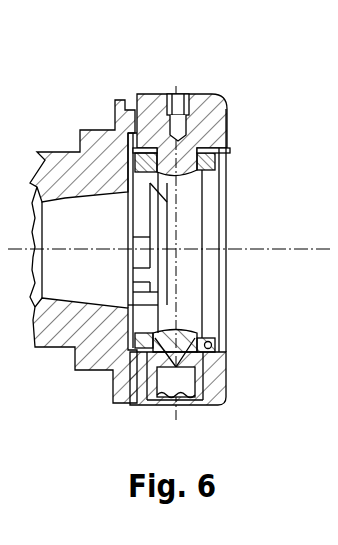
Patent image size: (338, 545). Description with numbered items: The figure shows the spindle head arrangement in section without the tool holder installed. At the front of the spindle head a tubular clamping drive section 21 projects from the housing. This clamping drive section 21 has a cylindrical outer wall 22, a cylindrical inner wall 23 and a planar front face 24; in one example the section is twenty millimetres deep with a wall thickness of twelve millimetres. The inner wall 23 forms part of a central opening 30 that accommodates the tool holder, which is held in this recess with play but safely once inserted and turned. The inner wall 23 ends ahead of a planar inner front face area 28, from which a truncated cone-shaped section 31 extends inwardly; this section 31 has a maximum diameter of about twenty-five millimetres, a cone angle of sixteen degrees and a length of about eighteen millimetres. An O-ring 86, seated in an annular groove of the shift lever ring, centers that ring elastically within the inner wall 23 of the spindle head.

The clamping drive section 21 is at (202, 78).
The cylindrical outer wall 22 is at (135, 96).
The cylindrical inner wall 23 is at (147, 148).
The front face 24 is at (227, 118).
The inner front face area 28 is at (128, 227).
The central opening 30 is at (238, 150).
The truncated cone-shaped section 31 is at (65, 198).
The O-ring 86 is at (216, 346).